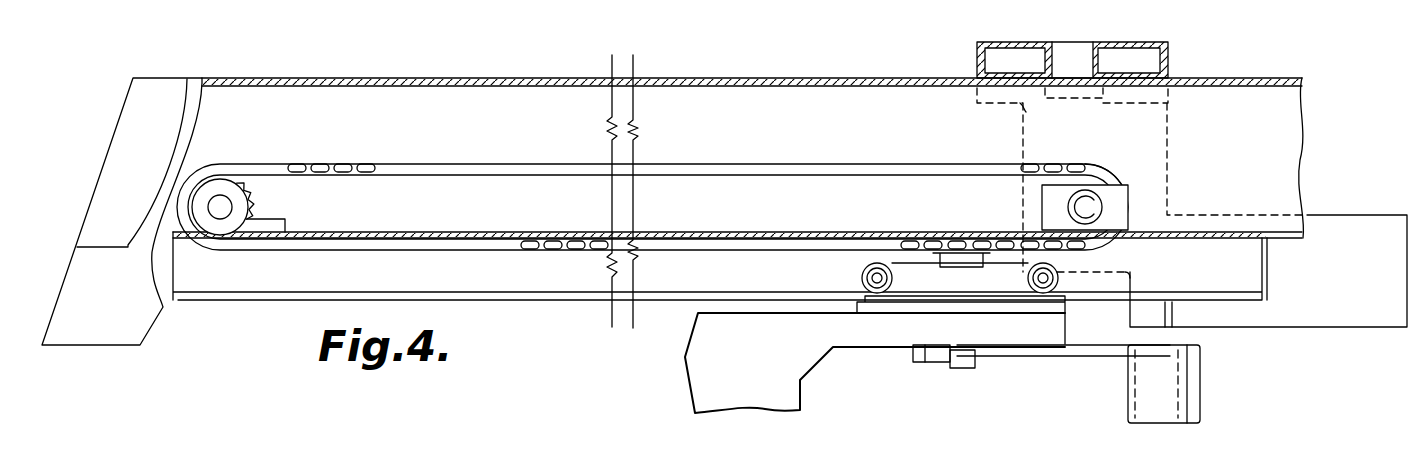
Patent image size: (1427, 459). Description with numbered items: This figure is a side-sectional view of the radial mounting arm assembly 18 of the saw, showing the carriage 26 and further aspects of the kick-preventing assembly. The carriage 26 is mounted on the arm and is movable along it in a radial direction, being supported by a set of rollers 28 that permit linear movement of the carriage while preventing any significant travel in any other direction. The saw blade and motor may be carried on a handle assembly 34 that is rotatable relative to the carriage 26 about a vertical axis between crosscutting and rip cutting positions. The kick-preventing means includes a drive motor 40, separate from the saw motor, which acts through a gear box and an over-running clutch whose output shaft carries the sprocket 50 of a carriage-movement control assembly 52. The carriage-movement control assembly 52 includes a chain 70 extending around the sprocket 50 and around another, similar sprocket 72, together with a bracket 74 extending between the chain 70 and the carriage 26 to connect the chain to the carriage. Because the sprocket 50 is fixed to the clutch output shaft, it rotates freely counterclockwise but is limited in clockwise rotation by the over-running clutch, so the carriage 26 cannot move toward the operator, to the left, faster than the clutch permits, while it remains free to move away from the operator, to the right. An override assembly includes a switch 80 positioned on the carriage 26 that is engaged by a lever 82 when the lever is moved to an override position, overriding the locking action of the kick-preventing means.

The mounting arm assembly 18 is at (1307, 105).
The carriage 26 is at (934, 285).
The rollers 28 is at (862, 279).
The handle assembly 34 is at (700, 375).
The drive motor 40 is at (1360, 320).
The sprocket 50 is at (1094, 169).
The carriage-movement control assembly 52 is at (1046, 163).
The chain 70 is at (532, 172).
The sprocket 72 is at (258, 191).
The bracket 74 is at (972, 260).
The switch 80 is at (923, 366).
The lever 82 is at (1192, 388).